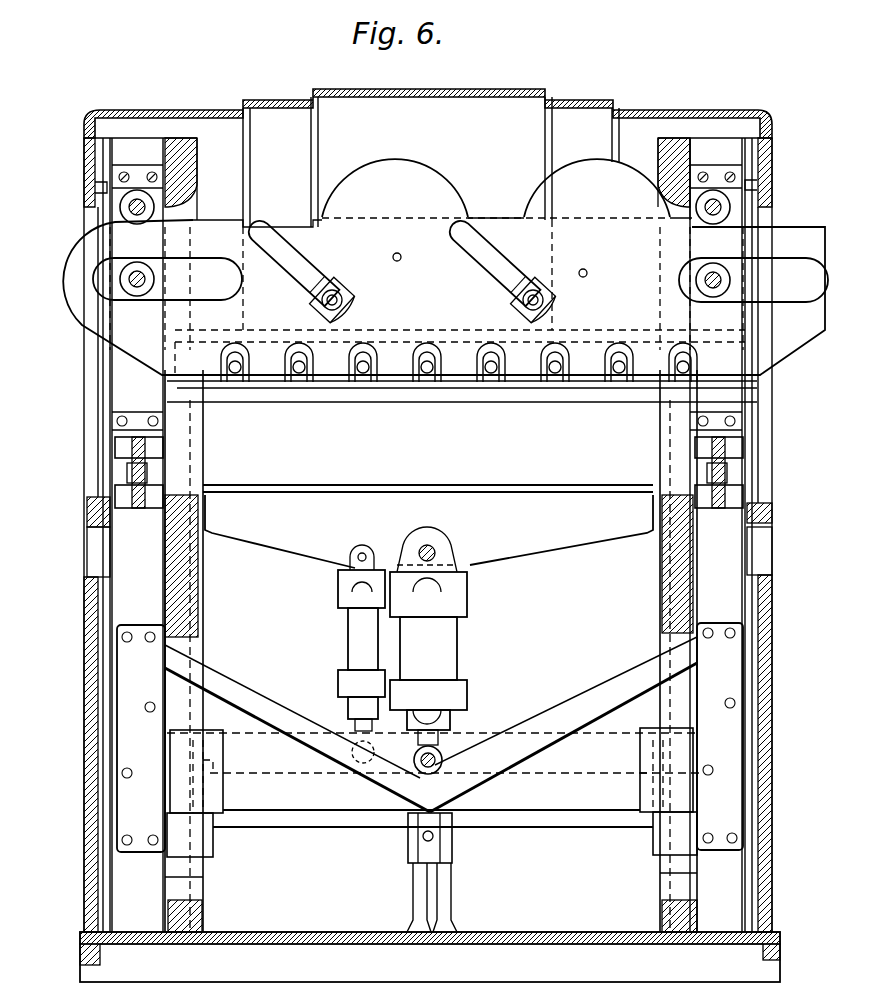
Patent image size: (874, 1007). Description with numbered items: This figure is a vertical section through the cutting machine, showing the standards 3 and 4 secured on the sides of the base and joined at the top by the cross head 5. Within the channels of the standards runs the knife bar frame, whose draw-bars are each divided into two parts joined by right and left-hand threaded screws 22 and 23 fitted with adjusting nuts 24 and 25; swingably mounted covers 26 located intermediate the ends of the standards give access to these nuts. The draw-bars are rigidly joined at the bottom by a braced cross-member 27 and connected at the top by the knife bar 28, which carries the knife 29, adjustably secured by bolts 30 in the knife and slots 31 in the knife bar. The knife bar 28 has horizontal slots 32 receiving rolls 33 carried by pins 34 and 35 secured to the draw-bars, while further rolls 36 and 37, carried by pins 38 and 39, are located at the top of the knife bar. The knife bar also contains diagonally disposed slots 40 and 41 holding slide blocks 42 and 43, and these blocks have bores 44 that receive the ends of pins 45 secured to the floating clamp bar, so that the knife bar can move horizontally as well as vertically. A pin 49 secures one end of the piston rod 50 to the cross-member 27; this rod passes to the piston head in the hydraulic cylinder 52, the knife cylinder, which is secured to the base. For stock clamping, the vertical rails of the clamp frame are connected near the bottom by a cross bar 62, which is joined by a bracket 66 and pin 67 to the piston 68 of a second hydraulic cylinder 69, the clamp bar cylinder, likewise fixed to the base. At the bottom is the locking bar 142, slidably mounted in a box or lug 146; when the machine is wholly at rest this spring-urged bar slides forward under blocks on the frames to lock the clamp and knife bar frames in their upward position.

The standard 3 is at (183, 580).
The standard 4 is at (680, 587).
The cross head 5 is at (492, 95).
The right and left-hand threaded screw 22 is at (138, 437).
The right and left-hand threaded screw 23 is at (138, 508).
The adjusting nut 24 is at (127, 472).
The adjusting nut 25 is at (733, 468).
The swingably mounted cover 26 is at (87, 550).
The braced cross-member 27 is at (587, 820).
The knife bar 28 is at (433, 167).
The knife 29 is at (403, 393).
The bolt 30 is at (433, 372).
The slot 31 is at (492, 380).
The horizontal slot 32 is at (212, 267).
The roll 33 is at (147, 293).
The pin 34 is at (92, 300).
The pin 35 is at (707, 278).
The roll 36 is at (120, 208).
The roll 37 is at (725, 213).
The pin 38 is at (140, 197).
The pin 39 is at (716, 200).
The diagonally disposed slot 40 is at (398, 260).
The diagonally disposed slot 41 is at (584, 277).
The slide block 42 is at (343, 288).
The slide block 43 is at (550, 286).
The bore 44 is at (340, 303).
The pin 45 is at (330, 292).
The pin 49 is at (440, 757).
The piston rod 50 is at (445, 740).
The hydraulic cylinder 52 is at (442, 632).
The cross bar 62 is at (300, 820).
The bracket 66 is at (342, 772).
The pin 67 is at (347, 756).
The piston 68 is at (358, 727).
The hydraulic cylinder 69 is at (353, 622).
The locking bar 142 is at (422, 837).
The box or lug 146 is at (443, 847).